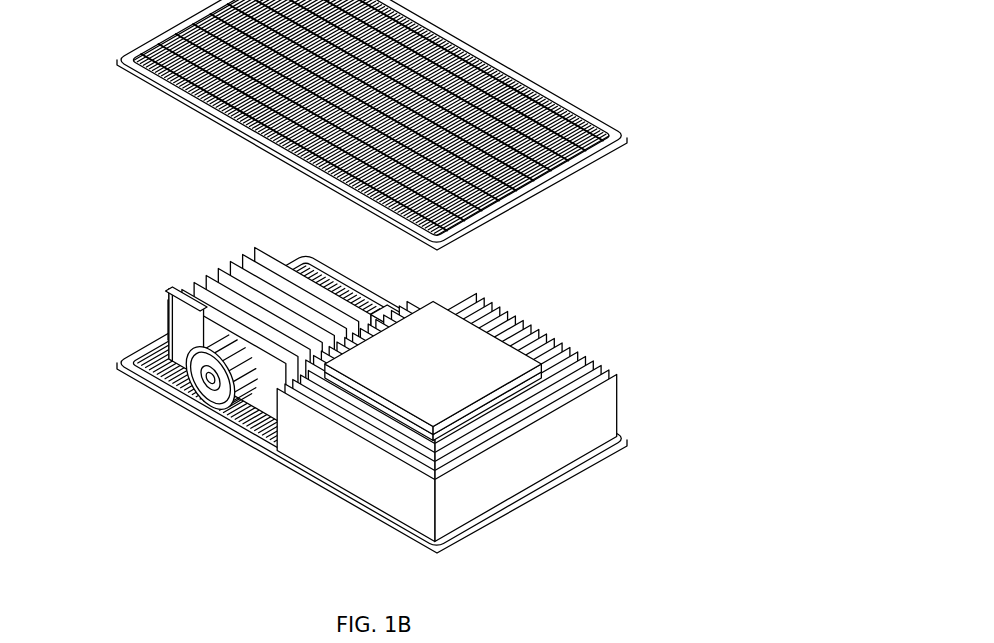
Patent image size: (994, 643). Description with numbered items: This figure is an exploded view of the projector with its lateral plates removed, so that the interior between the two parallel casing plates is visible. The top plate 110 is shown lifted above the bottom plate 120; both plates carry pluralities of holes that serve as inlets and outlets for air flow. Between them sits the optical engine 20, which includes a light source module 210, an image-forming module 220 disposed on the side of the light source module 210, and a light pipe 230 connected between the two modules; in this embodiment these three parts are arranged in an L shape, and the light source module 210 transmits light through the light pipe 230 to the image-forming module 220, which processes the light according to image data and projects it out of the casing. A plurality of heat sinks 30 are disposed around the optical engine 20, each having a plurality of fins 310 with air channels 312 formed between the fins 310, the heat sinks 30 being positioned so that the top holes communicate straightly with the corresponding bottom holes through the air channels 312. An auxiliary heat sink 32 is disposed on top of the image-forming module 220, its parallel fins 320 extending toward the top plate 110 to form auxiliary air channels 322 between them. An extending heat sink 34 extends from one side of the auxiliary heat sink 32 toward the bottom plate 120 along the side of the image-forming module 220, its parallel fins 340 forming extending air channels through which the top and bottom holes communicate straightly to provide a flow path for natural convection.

The top plate 110 is at (383, 125).
The bottom plate 120 is at (372, 403).
The optical engine 20 is at (406, 439).
The light source module 210 is at (392, 378).
The image-forming module 220 is at (315, 440).
The light pipe 230 is at (333, 417).
The heat sinks 30 is at (433, 436).
The fins 310 is at (573, 420).
The air channels 312 is at (570, 452).
The auxiliary heat sink 32 is at (213, 337).
The extending heat sink 34 is at (145, 314).
The fins 340 is at (198, 276).
The fins 320 is at (298, 296).
The auxiliary air channels 322 is at (317, 260).